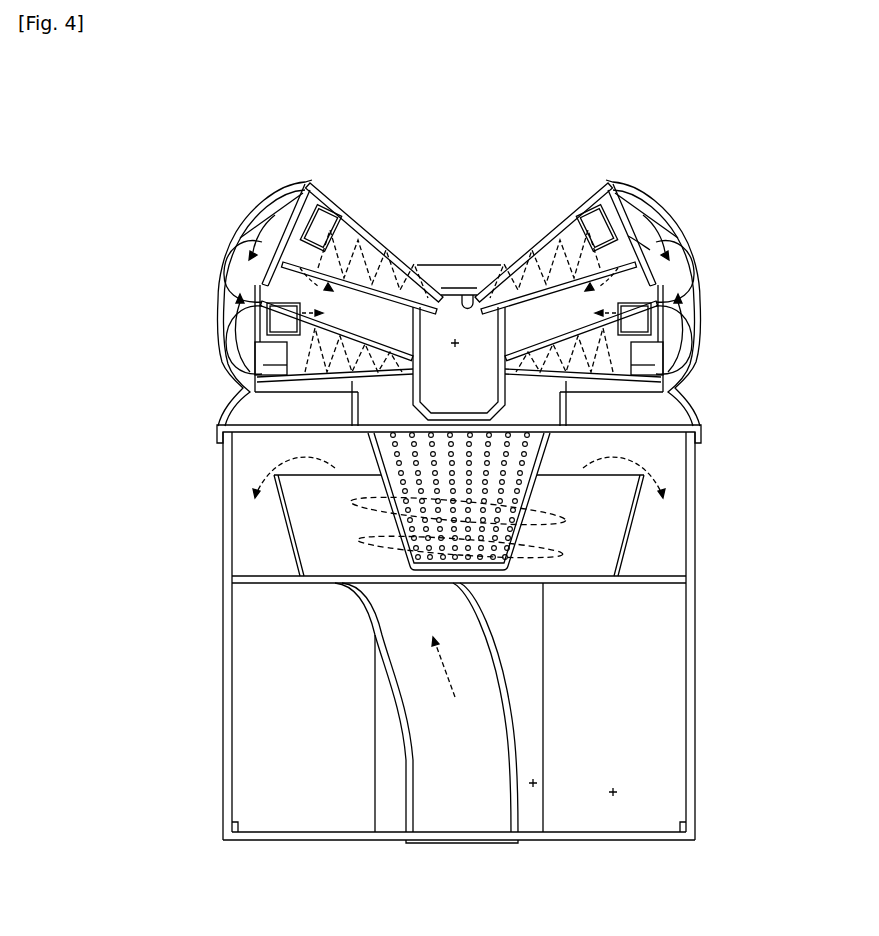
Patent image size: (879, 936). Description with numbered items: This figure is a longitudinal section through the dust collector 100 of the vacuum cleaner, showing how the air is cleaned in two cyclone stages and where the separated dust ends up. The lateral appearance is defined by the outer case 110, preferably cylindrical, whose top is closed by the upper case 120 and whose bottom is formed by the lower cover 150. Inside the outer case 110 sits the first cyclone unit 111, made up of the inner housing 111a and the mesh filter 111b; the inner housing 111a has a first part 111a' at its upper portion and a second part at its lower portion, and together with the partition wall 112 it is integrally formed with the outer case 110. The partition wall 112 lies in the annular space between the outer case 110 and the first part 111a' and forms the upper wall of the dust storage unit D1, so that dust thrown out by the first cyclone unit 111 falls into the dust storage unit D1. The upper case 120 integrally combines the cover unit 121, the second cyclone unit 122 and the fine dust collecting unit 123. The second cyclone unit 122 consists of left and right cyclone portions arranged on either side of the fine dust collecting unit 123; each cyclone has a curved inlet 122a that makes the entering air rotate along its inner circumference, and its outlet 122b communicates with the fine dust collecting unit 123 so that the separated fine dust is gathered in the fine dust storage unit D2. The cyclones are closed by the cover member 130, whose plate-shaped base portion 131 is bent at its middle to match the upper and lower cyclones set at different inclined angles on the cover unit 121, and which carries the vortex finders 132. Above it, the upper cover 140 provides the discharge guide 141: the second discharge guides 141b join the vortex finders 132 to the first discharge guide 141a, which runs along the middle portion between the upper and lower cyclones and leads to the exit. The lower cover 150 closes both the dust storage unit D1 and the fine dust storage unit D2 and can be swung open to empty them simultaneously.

The dust collector 100 is at (240, 165).
The outer case 110 is at (694, 607).
The first cyclone unit 111 is at (97, 440).
The inner housing 111a is at (371, 653).
The first part 111a' is at (399, 525).
The mesh filter 111b is at (372, 455).
The partition wall 112 is at (650, 578).
The upper case 120 is at (428, 117).
The cover unit 121 is at (310, 420).
The second cyclone unit 122 is at (371, 222).
The inlet 122a is at (640, 245).
The outlet 122b is at (455, 343).
The fine dust collecting unit 123 is at (459, 278).
The cover member 130 is at (729, 147).
The base portion 131 is at (600, 216).
The vortex finder 132 is at (612, 228).
The upper cover 140 is at (690, 404).
The discharge guide 141 is at (799, 250).
The first discharge guide 141a is at (688, 270).
The second discharge guide 141b is at (688, 335).
The lower cover 150 is at (660, 838).
The dust storage unit D1 is at (612, 797).
The fine dust storage unit D2 is at (530, 790).